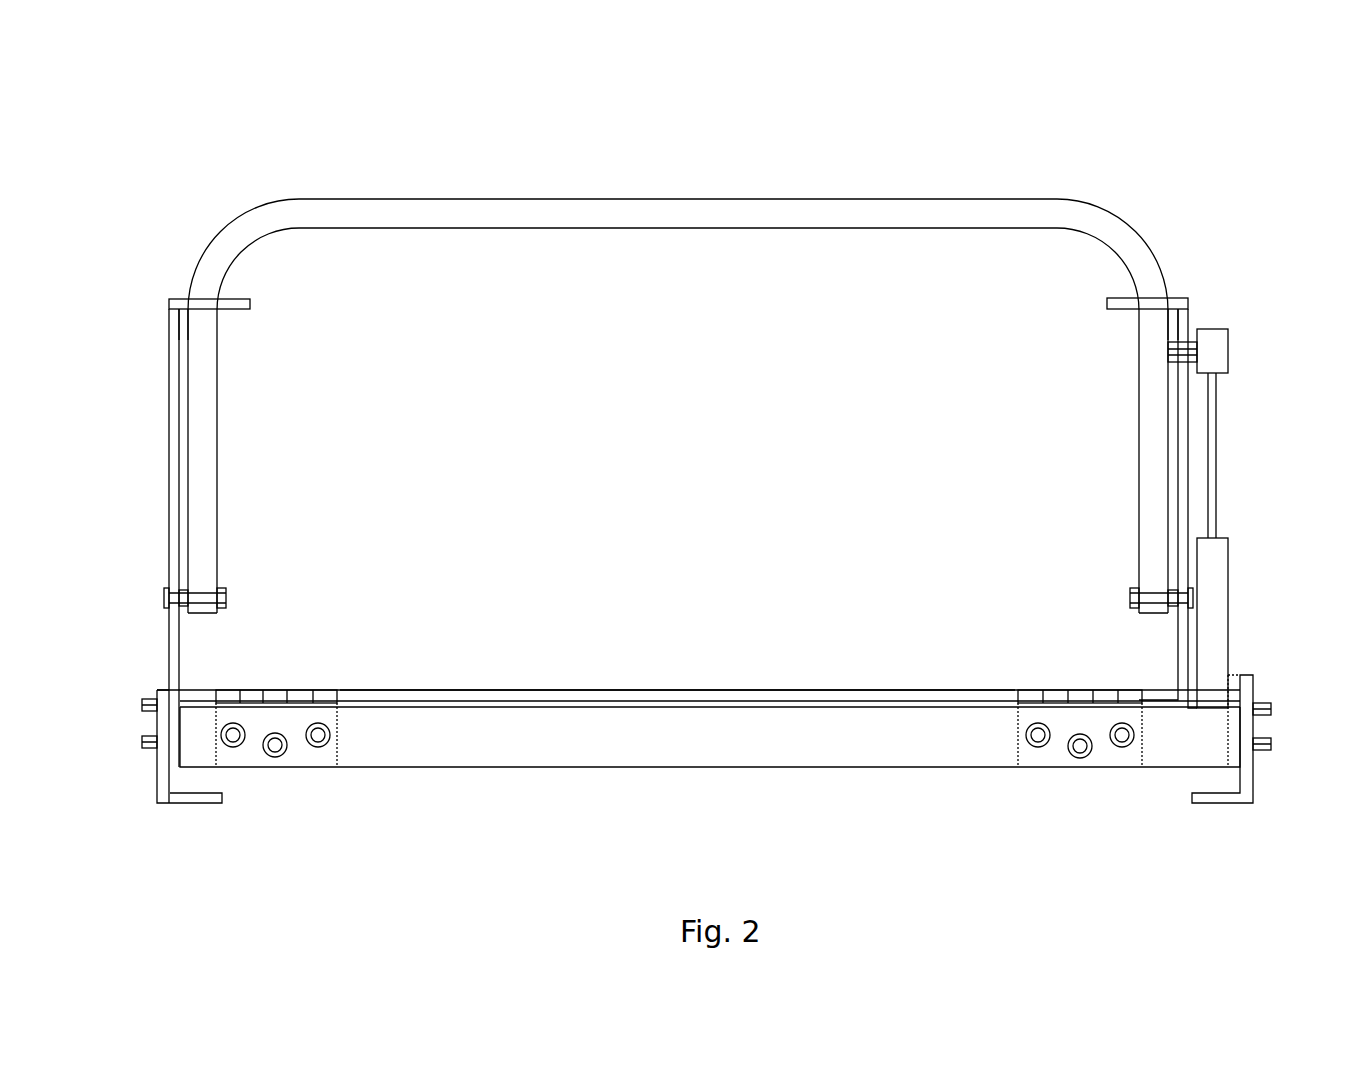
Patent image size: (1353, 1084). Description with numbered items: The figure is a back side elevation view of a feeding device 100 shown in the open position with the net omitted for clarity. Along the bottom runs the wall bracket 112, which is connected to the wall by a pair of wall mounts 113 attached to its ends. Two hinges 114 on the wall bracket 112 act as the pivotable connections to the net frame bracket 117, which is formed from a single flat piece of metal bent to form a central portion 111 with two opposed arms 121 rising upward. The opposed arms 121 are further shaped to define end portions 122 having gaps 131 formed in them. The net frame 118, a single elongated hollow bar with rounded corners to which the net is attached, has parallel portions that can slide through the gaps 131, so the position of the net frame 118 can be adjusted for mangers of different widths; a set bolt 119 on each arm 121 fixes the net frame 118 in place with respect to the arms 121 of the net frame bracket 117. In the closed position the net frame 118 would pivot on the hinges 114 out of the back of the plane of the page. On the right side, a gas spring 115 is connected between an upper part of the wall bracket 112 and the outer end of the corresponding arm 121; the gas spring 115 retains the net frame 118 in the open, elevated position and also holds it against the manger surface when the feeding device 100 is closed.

The feeding device 100 is at (1113, 147).
The net frame 118 is at (570, 212).
The opposed arms 121 is at (1218, 225).
The end portions 122 is at (250, 300).
The gaps 131 is at (1150, 315).
The set bolt 119 is at (1140, 597).
The net frame bracket 117 is at (667, 670).
The central portion 111 is at (517, 690).
The hinges 114 is at (1040, 690).
The wall bracket 112 is at (732, 745).
The wall mounts 113 is at (180, 798).
The gas spring 115 is at (1230, 510).